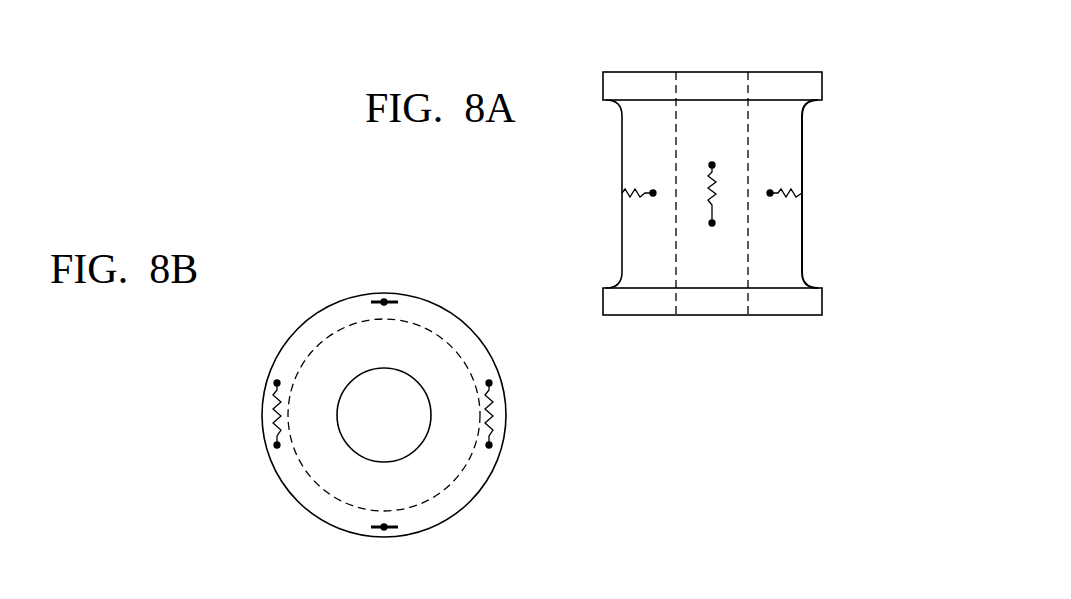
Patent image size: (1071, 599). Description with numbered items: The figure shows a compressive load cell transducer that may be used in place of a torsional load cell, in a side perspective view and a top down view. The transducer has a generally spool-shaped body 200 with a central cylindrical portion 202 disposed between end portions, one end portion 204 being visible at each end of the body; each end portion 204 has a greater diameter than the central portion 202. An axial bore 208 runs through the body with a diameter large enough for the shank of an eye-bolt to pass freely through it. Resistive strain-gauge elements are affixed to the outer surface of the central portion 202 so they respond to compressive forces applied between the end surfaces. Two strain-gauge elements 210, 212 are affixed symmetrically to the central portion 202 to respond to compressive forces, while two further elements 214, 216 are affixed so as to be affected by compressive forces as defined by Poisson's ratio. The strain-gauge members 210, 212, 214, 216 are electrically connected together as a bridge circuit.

In FIG. 8A, the spool-shaped body 200 is at (726, 195).
In FIG. 8A, the central cylindrical portion 202 is at (777, 263).
In FIG. 8A, the end portion 204 is at (648, 71).
In FIG. 8A, the axial bore 208 is at (718, 275).
In FIG. 8B, the axial bore 208 is at (365, 408).
In FIG. 8A, the strain-gauge element 210 is at (722, 177).
In FIG. 8B, the strain-gauge element 210 is at (385, 302).
In FIG. 8B, the strain-gauge element 212 is at (382, 530).
In FIG. 8A, the strain-gauge element 214 is at (632, 195).
In FIG. 8A, the strain-gauge element 216 is at (787, 194).